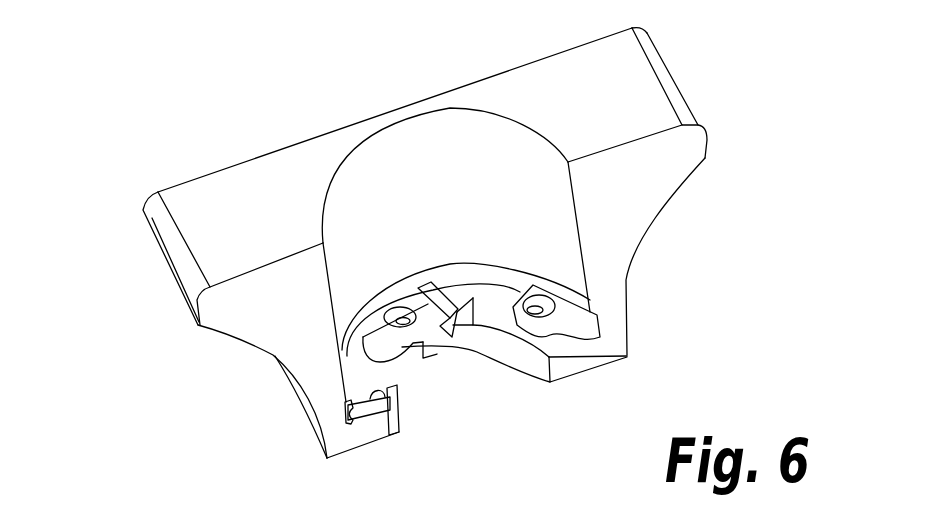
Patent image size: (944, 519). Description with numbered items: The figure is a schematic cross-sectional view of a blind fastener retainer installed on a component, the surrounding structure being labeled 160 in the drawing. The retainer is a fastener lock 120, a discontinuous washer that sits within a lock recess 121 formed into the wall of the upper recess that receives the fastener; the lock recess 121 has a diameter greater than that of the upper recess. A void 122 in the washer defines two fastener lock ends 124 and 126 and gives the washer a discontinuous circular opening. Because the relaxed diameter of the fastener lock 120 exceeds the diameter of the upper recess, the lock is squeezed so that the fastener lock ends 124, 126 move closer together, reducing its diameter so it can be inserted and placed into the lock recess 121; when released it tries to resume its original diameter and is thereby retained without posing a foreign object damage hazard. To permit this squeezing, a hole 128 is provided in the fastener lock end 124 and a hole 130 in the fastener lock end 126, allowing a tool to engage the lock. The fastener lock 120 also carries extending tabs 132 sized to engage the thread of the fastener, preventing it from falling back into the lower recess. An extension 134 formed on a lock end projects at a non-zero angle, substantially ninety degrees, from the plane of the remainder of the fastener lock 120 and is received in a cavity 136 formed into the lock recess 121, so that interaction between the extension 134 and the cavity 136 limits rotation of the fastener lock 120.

The housing body 160 is at (537, 72).
The fastener lock end 124 is at (432, 288).
The void 122 is at (483, 294).
The fastener lock end 126 is at (531, 292).
The hole 130 is at (567, 292).
The cavity 136 is at (467, 350).
The hole 128 is at (463, 330).
The extension 134 is at (412, 322).
The lock recess 121 is at (340, 402).
The fastener lock 120 is at (398, 436).
The extending tab 132 is at (400, 345).